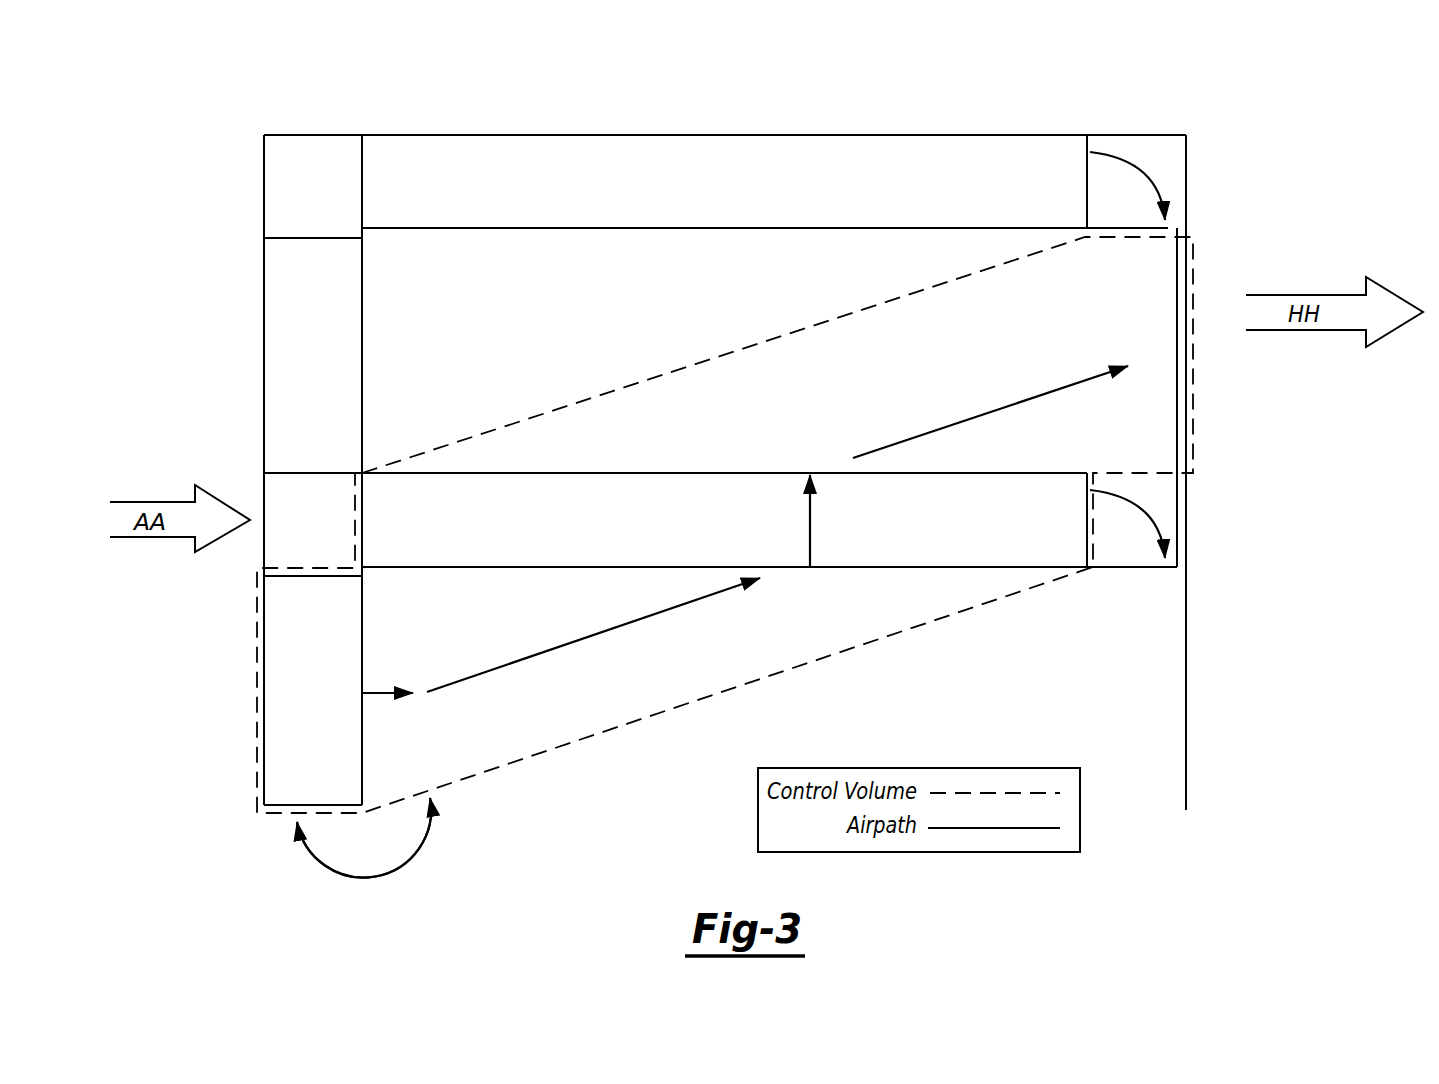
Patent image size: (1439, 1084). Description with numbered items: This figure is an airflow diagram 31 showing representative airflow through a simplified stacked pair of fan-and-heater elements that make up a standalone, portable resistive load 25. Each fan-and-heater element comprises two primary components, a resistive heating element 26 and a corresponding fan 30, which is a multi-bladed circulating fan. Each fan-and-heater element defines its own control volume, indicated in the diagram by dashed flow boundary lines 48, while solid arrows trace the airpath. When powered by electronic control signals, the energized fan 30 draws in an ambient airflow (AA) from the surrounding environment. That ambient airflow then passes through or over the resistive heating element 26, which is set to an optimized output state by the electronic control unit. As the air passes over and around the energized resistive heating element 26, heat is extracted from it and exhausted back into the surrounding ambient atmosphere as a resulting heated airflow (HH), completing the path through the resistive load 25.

The airflow diagram 31 is at (1207, 84).
The resistive load 25 is at (1188, 181).
The resistive heating element 26 is at (955, 178).
The fan 30 is at (285, 294).
The flow boundary lines 48 is at (832, 320).